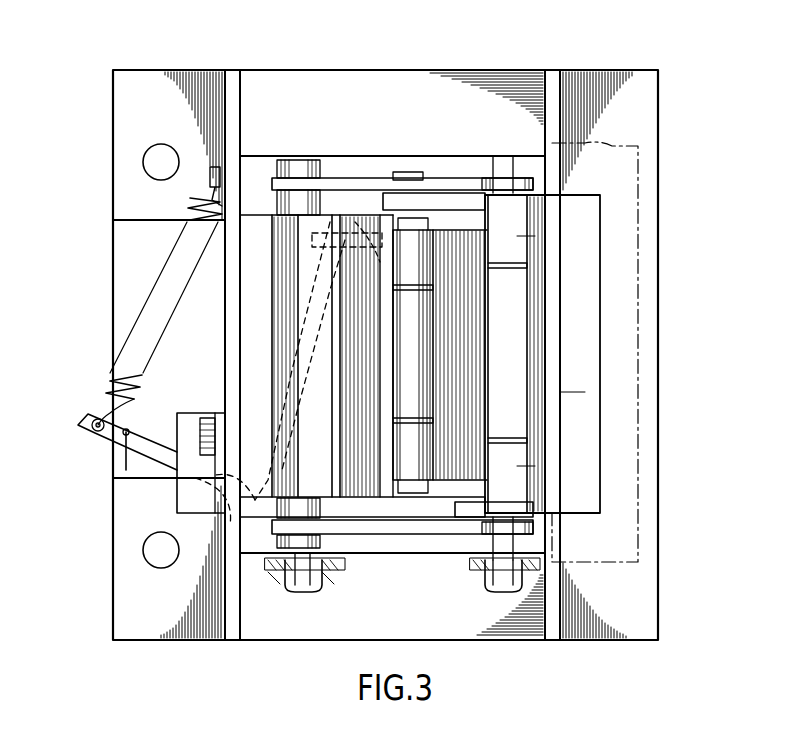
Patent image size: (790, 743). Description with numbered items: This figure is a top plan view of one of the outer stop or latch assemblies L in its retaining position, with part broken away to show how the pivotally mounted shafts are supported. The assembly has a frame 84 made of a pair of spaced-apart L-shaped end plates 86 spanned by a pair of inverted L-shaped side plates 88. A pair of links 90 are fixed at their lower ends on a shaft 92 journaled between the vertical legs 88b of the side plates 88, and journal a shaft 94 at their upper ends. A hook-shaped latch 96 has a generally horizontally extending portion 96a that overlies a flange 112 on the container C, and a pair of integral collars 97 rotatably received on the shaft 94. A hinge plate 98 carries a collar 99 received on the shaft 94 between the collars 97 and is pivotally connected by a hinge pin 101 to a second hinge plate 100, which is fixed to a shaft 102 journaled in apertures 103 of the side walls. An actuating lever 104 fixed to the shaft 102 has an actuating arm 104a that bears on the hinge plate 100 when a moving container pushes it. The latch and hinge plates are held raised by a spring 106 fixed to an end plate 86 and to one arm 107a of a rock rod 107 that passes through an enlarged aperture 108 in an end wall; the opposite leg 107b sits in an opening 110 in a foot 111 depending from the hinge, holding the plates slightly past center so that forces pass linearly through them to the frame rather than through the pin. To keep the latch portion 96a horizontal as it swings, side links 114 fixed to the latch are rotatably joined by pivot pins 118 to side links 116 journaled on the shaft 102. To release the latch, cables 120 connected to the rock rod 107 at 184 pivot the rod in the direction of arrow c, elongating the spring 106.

The frame 84 is at (168, 643).
The end plates 86 is at (226, 310).
The side plates 88 is at (366, 73).
The vertical legs of the side plates 88b is at (262, 558).
The links 90 is at (528, 165).
The shaft 92 is at (487, 582).
The shaft 94 is at (475, 556).
The hook-shaped latch 96 is at (602, 360).
The horizontally extending portion 96a is at (578, 397).
The collars 97 is at (525, 242).
The hinge plate 98 is at (444, 470).
The collar 99 is at (517, 325).
The second hinge plate 100 is at (362, 369).
The hinge pin 101 is at (394, 490).
The shaft 102 is at (290, 586).
The apertures 103 is at (325, 578).
The actuating lever 104 is at (316, 376).
The actuating arm 104a is at (318, 428).
The spring 106 is at (143, 294).
The rock rod 107 is at (165, 445).
The arm of the rock rod 107a is at (90, 446).
The leg of the rock rod 107b is at (312, 338).
The enlarged aperture 108 is at (215, 526).
The opening 110 is at (347, 258).
The foot 111 is at (372, 224).
The flange 112 is at (630, 432).
The side links 114 is at (446, 201).
The side links 116 is at (345, 176).
The pivot pins 118 is at (402, 552).
The cables 120 is at (120, 460).
The cable connection 184 is at (133, 440).
The outer stop or latch assemblies L is at (530, 54).
The arrow c is at (264, 98).
The containers C is at (642, 490).